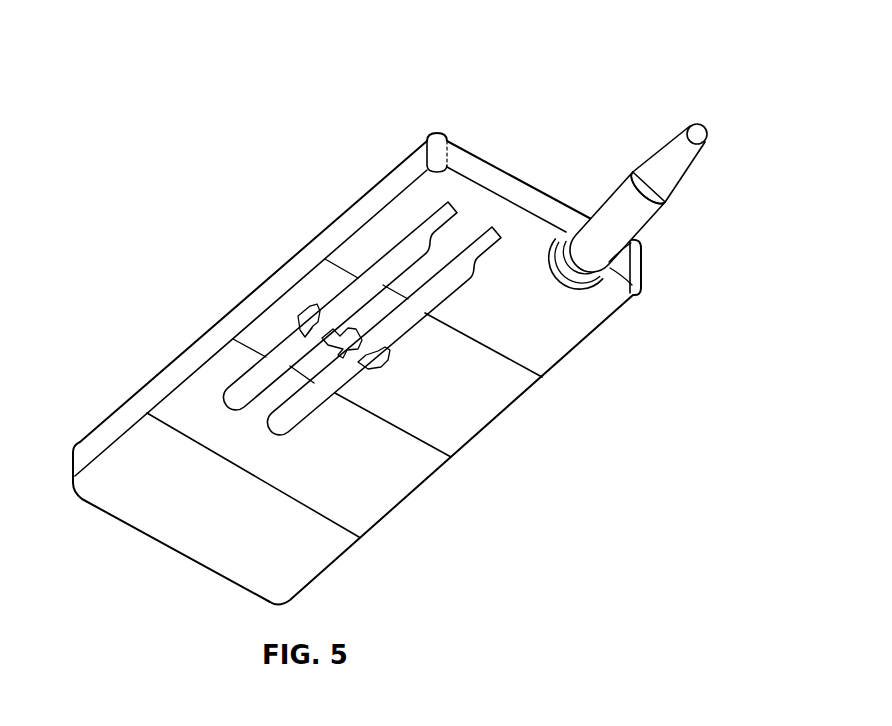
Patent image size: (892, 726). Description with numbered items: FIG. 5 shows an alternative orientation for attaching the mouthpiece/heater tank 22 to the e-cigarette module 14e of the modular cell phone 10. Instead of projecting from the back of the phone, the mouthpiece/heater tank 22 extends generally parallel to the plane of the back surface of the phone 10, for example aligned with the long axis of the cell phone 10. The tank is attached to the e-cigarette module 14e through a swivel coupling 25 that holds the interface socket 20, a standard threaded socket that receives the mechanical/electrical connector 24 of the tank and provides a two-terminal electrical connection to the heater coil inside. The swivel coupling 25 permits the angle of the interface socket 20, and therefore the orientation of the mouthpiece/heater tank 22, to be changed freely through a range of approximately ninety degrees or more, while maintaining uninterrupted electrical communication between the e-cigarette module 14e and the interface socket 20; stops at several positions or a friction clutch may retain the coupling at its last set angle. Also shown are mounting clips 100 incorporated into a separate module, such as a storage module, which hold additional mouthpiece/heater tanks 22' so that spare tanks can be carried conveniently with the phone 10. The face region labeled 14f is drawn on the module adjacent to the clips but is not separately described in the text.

The modular cell phone 10 is at (205, 100).
The e-cigarette module 14e is at (547, 353).
The upper shelf of body 14f is at (302, 300).
The interface socket 20 is at (595, 286).
The mouthpiece/heater tank 22 is at (644, 198).
The additional mouthpiece/heater tanks 22' is at (362, 273).
The mechanical/electrical connector 24 is at (633, 289).
The swivel coupling 25 is at (553, 237).
The mounting clips 100 is at (310, 320).